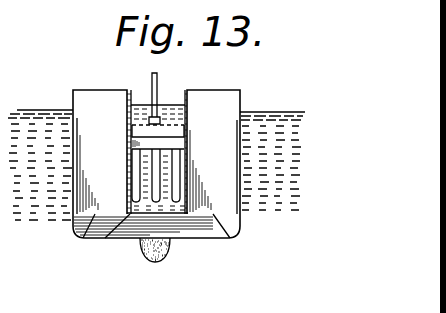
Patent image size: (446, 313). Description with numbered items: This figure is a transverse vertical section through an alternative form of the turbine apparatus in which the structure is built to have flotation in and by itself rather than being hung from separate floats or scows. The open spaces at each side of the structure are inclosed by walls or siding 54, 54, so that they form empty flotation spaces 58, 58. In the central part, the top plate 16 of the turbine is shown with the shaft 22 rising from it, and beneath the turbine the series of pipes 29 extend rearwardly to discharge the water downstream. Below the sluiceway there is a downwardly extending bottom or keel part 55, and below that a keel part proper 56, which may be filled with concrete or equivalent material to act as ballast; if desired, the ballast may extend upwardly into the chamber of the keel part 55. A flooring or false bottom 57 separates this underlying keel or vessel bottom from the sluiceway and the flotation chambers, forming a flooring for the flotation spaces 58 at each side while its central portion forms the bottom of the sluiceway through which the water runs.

The top plate 16 is at (172, 125).
The shaft 22 is at (152, 78).
The pipes 29 is at (155, 172).
The walls or siding 54 is at (240, 153).
The bottom or keel part 55 is at (192, 230).
The keel part proper 56 is at (150, 252).
The flooring or false bottom 57 is at (242, 253).
The flotation spaces 58 is at (156, 152).